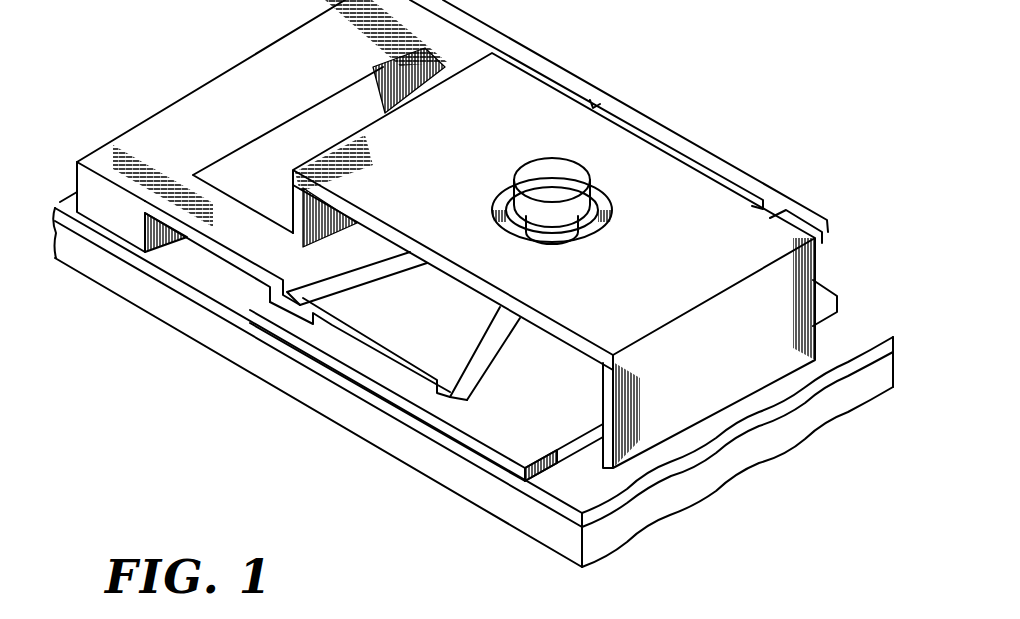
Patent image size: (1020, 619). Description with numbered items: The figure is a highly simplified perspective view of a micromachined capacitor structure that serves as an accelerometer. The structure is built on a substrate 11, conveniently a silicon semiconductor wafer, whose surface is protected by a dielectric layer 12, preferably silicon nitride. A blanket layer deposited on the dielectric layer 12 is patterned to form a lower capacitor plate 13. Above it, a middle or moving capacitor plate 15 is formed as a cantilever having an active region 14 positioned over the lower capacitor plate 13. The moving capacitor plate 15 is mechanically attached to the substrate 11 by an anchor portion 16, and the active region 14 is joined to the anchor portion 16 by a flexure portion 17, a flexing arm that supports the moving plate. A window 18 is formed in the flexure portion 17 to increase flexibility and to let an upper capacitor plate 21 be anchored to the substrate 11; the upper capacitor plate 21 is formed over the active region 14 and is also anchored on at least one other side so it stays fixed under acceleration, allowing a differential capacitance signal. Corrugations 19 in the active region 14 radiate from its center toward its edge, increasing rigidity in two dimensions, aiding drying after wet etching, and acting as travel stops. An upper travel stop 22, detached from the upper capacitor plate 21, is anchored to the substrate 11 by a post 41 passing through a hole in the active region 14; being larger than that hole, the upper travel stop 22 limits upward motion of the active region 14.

The substrate 11 is at (543, 525).
The dielectric layer 12 is at (500, 475).
The lower capacitor plate 13 is at (395, 402).
The active region 14 is at (368, 340).
The moving capacitor plate 15 is at (613, 100).
The anchor portion 16 is at (112, 223).
The flexure portion 17 is at (205, 238).
The window 18 is at (325, 120).
The corrugations 19 is at (273, 300).
The upper capacitor plate 21 is at (690, 255).
The upper travel stop 22 is at (535, 172).
The post 41 is at (580, 223).